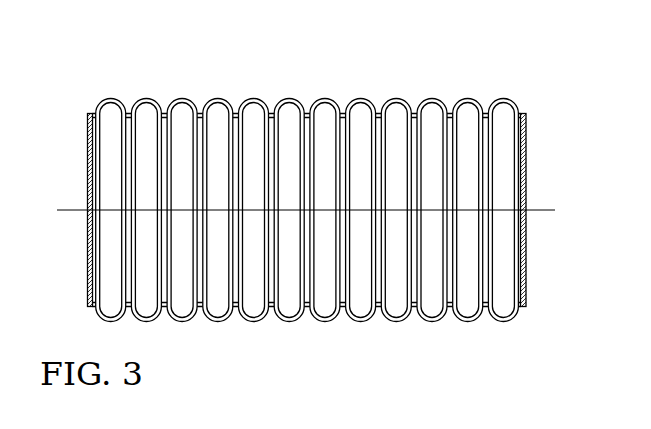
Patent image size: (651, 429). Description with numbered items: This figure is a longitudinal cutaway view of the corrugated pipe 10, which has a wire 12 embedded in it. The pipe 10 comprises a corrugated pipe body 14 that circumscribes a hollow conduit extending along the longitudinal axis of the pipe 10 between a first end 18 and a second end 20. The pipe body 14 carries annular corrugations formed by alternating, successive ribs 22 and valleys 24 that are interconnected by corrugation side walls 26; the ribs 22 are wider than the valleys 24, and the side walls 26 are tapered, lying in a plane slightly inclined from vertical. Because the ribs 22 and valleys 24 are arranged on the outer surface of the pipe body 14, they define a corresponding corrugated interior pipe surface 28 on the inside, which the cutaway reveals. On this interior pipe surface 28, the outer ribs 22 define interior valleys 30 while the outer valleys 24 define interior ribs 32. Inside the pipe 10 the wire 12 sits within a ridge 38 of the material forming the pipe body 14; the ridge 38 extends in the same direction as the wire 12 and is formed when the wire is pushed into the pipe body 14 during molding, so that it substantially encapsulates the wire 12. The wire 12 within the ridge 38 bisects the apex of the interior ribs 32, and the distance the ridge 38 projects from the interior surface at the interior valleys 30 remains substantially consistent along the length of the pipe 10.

The corrugated pipe 10 is at (117, 50).
The wire 12 is at (68, 208).
The corrugated pipe body 14 is at (527, 131).
The first end 18 is at (70, 153).
The second end 20 is at (542, 159).
The ribs 22 is at (395, 323).
The valleys 24 is at (260, 316).
The corrugation side walls 26 is at (312, 102).
The corrugated interior pipe surface 28 is at (397, 137).
The interior valleys 30 is at (168, 107).
The interior ribs 32 is at (222, 115).
The ridge 38 is at (500, 210).